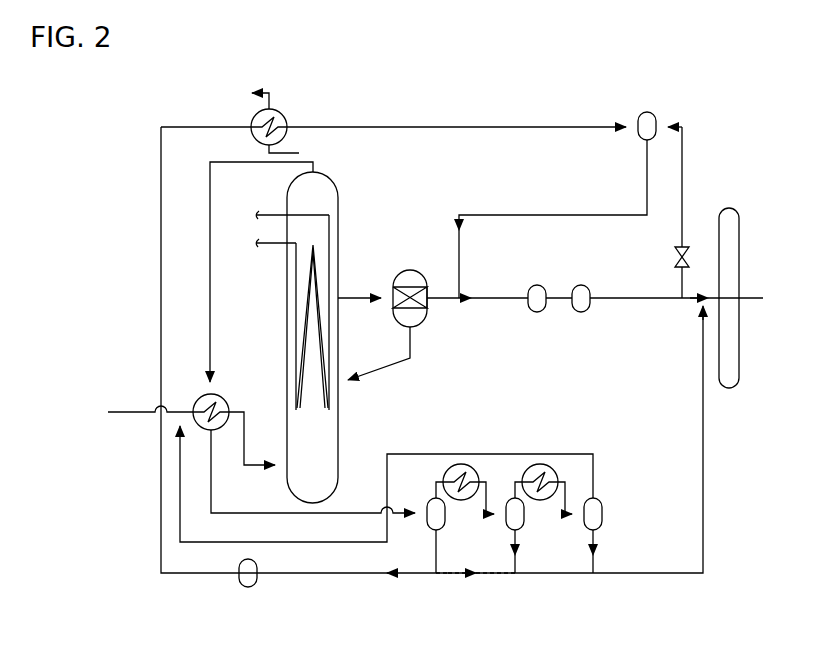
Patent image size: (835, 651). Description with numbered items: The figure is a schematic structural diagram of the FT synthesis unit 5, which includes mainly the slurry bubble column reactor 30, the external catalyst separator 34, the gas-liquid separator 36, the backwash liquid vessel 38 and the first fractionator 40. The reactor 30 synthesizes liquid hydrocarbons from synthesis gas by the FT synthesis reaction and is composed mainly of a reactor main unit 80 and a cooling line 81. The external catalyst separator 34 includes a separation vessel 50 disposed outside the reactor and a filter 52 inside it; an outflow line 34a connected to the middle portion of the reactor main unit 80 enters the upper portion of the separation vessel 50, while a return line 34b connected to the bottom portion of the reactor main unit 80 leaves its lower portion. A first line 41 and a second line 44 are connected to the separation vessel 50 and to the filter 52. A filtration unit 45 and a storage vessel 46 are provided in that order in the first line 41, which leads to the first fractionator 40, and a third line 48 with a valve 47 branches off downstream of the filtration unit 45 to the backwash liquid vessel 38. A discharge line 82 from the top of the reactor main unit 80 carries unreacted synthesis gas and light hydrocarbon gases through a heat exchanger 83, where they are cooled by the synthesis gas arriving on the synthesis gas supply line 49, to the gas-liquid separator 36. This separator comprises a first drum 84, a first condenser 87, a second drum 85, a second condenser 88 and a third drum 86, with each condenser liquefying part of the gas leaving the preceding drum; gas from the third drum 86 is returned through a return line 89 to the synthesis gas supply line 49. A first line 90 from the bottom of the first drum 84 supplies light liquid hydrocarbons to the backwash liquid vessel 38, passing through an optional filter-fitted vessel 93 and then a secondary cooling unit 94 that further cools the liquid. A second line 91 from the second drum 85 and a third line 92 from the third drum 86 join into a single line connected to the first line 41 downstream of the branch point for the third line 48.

The FT synthesis unit 5 is at (716, 92).
The slurry bubble column reactor 30 is at (307, 341).
The external catalyst separator 34 is at (384, 301).
The outflow line 34a is at (356, 292).
The return line 34b is at (384, 370).
The gas-liquid separator 36 is at (538, 477).
The backwash liquid vessel 38 is at (650, 110).
The first fractionator 40 is at (717, 226).
The first line 41 is at (448, 302).
The second line 44 is at (462, 256).
The filtration unit 45 is at (538, 283).
The storage vessel 46 is at (582, 283).
The valve 47 is at (675, 263).
The third line 48 is at (681, 228).
The synthesis gas supply line 49 is at (122, 414).
The separation vessel 50 is at (403, 327).
The filter 52 is at (397, 303).
The reactor main unit 80 is at (287, 475).
The cooling line 81 is at (296, 322).
The discharge line 82 is at (210, 272).
The heat exchanger 83 is at (197, 399).
The first drum 84 is at (446, 516).
The second drum 85 is at (526, 516).
The third drum 86 is at (604, 516).
The first condenser 87 is at (477, 474).
The second condenser 88 is at (556, 474).
The return line 89 is at (520, 454).
The first line 90 is at (452, 575).
The second line 91 is at (520, 546).
The third line 92 is at (598, 546).
The vessel 93 is at (253, 588).
The secondary cooling unit 94 is at (283, 113).